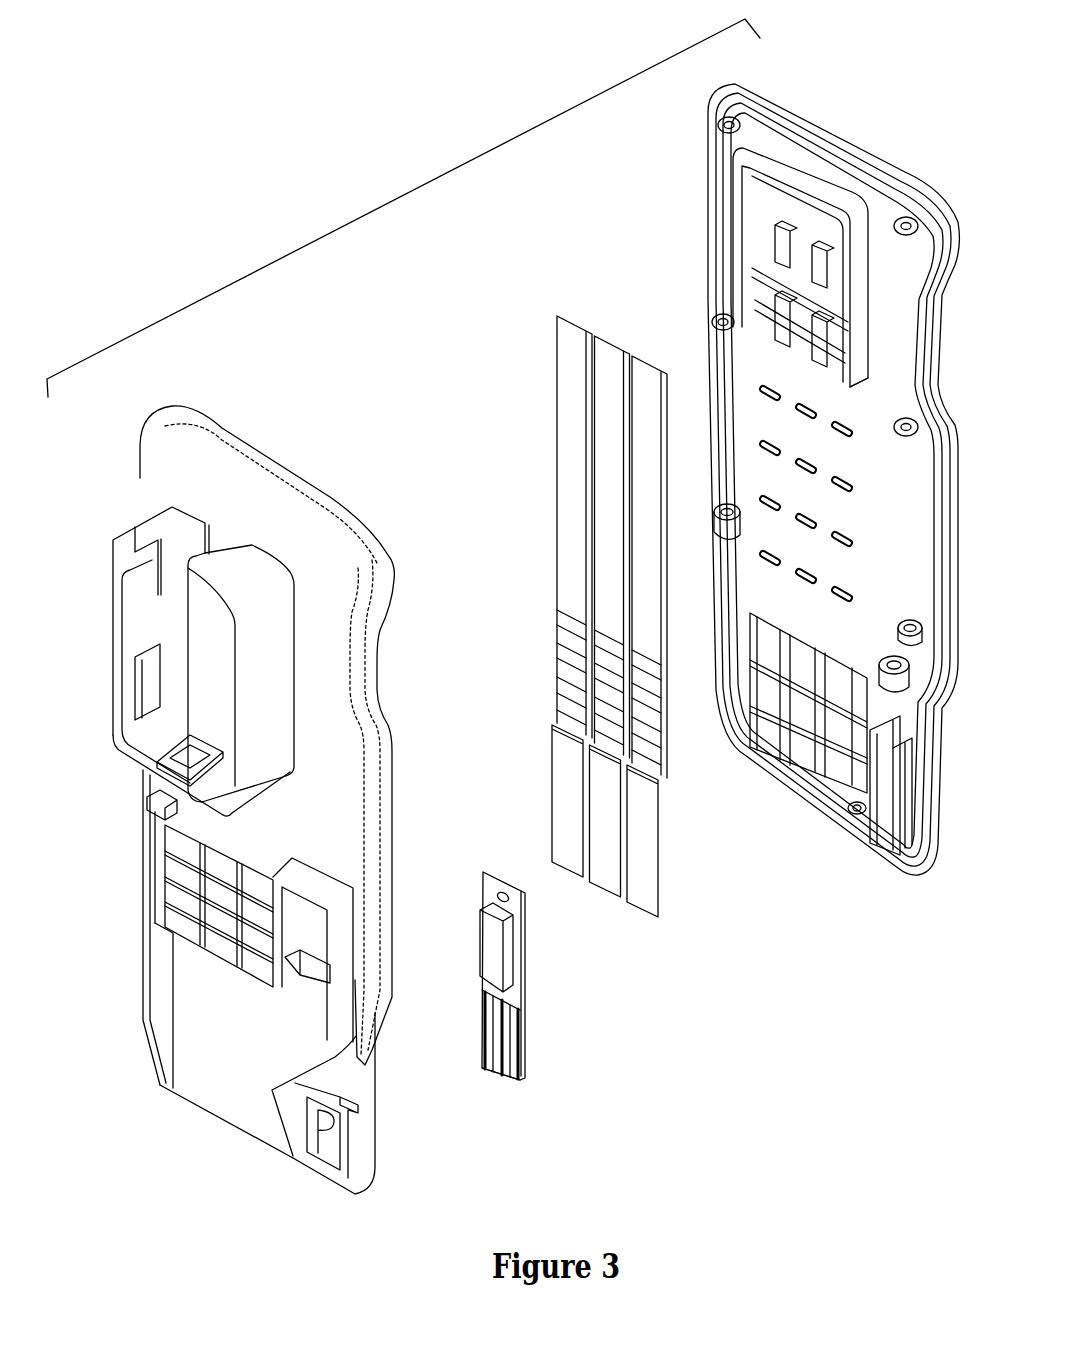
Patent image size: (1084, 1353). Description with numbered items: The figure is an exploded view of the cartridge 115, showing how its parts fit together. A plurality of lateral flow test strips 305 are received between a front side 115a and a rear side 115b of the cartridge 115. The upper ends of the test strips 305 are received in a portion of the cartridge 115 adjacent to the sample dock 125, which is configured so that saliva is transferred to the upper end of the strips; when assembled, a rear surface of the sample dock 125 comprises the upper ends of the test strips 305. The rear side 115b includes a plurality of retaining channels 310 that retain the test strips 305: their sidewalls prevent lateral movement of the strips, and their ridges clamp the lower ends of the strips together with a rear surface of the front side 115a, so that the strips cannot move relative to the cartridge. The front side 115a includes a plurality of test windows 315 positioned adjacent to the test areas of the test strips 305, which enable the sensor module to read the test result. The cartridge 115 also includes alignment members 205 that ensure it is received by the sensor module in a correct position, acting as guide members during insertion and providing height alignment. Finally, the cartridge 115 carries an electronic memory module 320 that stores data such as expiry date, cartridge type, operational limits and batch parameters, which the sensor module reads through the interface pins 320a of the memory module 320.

The cartridge 115 is at (402, 196).
The front side 115a is at (220, 430).
The rear side 115b is at (700, 163).
The sample dock 125 is at (122, 522).
The alignment members 205 is at (147, 967).
The lateral flow test strips 305 is at (556, 410).
The retaining channels 310 is at (800, 772).
The test windows 315 is at (165, 824).
The electronic memory module 320 is at (541, 962).
The interface pins 320a is at (530, 1047).